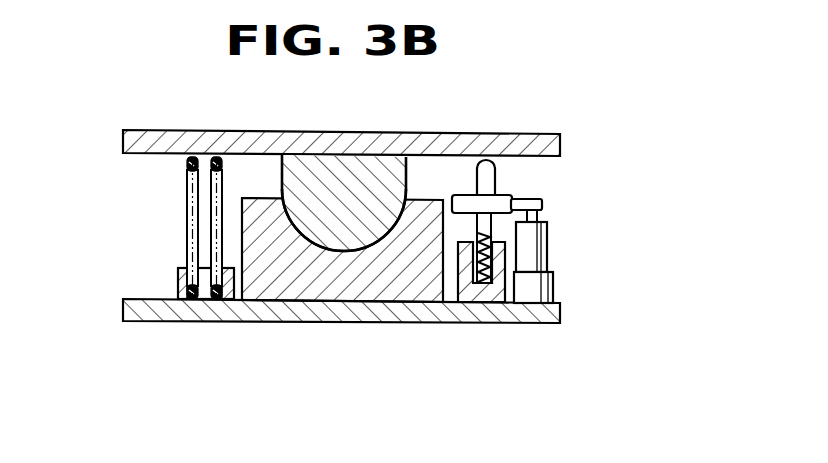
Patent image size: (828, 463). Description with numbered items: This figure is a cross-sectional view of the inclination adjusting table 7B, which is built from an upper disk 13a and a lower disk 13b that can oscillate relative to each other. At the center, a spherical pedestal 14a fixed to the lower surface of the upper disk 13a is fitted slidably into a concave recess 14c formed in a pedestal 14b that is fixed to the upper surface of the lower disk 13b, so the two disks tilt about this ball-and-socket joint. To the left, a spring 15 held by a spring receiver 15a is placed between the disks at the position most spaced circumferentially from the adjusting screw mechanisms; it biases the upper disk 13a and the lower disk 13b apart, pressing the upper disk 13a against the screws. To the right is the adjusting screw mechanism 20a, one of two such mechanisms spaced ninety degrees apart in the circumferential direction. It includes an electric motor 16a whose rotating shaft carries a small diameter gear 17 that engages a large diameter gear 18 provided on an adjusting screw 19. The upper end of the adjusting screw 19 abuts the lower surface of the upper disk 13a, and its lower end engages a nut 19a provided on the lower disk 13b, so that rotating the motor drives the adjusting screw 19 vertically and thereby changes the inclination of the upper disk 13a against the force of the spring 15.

The inclination adjusting table 7B is at (598, 91).
The upper disk 13a is at (560, 143).
The lower disk 13b is at (560, 315).
The spherical pedestal 14a is at (357, 185).
The pedestal 14b is at (385, 270).
The concave recess 14c is at (338, 238).
The spring 15 is at (187, 192).
The spring receiver 15a is at (178, 275).
The electric motor 16a is at (548, 246).
The small diameter gear 17 is at (541, 200).
The large diameter gear 18 is at (505, 195).
The adjusting screw 19 is at (485, 160).
The nut 19a is at (484, 287).
The adjusting screw mechanism 20a is at (634, 209).